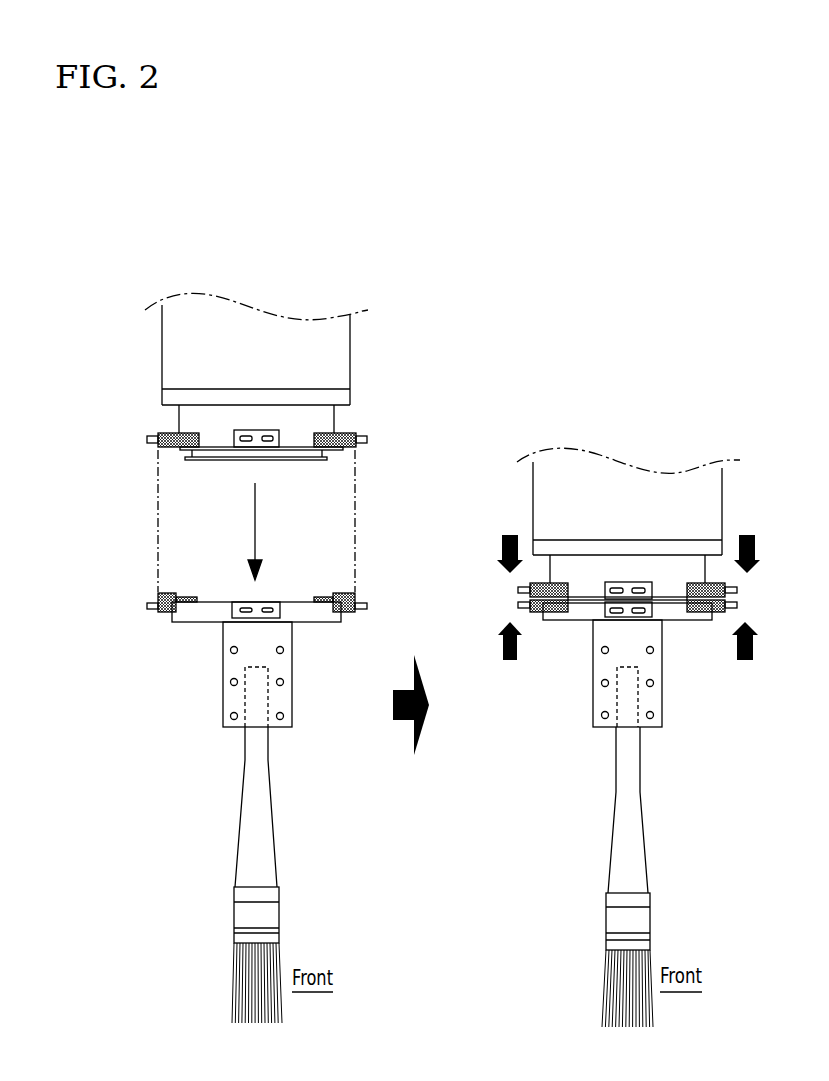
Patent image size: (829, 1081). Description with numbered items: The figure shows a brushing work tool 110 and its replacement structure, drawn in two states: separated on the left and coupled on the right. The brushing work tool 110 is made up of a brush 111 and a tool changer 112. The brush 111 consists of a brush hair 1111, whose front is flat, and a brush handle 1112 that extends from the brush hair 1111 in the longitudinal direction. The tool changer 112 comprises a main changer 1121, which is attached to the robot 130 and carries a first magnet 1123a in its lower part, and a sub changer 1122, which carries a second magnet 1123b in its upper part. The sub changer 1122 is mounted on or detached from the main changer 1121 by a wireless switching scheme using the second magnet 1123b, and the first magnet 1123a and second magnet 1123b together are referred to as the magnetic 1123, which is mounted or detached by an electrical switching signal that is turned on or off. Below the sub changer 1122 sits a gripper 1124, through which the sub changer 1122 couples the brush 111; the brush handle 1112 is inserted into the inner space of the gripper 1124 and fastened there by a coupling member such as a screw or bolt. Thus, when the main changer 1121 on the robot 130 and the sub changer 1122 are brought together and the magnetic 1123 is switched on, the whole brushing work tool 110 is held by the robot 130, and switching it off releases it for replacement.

The brushing work tool 110 is at (365, 886).
The brush 111 is at (365, 877).
The brush hair 1111 is at (233, 975).
The brush handle 1112 is at (245, 753).
The tool changer 112 is at (78, 392).
The main changer 1121 is at (187, 422).
The sub changer 1122 is at (182, 612).
The magnetic 1123 is at (518, 605).
The first magnet 1123a is at (162, 448).
The second magnet 1123b is at (160, 598).
The gripper 1124 is at (223, 710).
The robot 130 is at (255, 328).